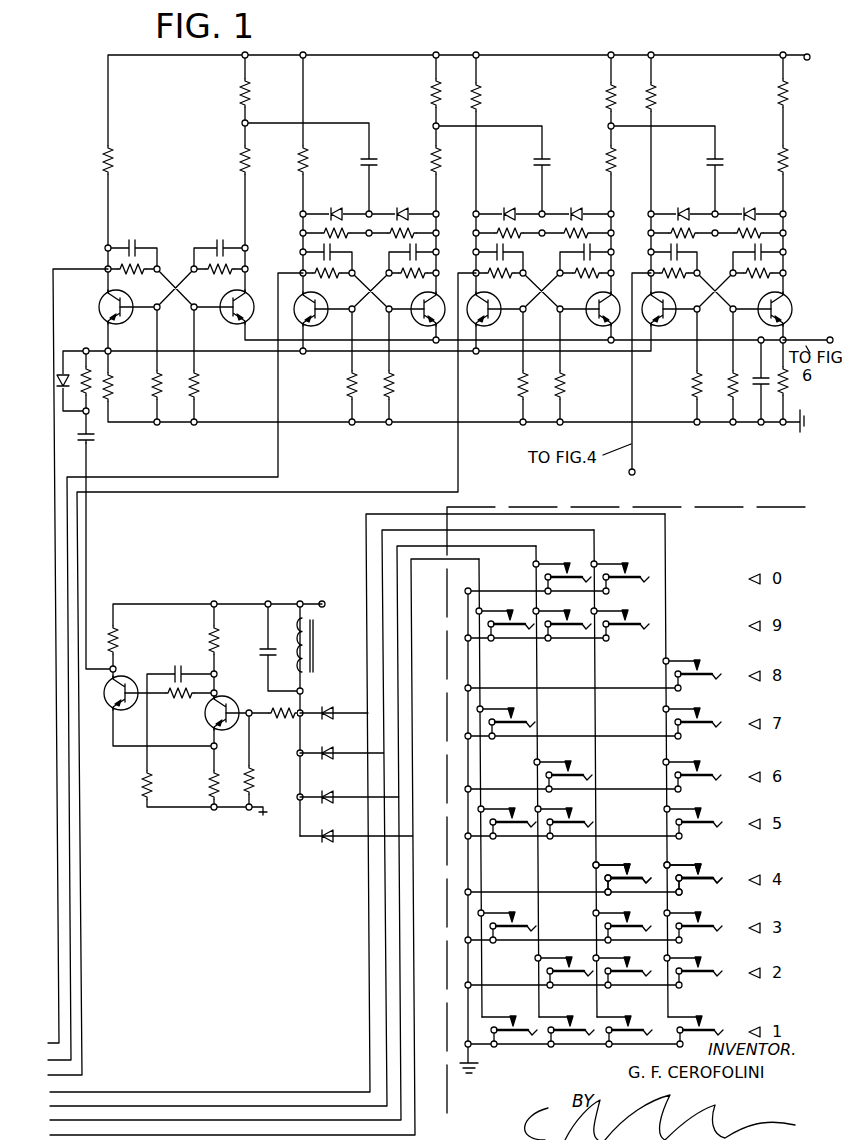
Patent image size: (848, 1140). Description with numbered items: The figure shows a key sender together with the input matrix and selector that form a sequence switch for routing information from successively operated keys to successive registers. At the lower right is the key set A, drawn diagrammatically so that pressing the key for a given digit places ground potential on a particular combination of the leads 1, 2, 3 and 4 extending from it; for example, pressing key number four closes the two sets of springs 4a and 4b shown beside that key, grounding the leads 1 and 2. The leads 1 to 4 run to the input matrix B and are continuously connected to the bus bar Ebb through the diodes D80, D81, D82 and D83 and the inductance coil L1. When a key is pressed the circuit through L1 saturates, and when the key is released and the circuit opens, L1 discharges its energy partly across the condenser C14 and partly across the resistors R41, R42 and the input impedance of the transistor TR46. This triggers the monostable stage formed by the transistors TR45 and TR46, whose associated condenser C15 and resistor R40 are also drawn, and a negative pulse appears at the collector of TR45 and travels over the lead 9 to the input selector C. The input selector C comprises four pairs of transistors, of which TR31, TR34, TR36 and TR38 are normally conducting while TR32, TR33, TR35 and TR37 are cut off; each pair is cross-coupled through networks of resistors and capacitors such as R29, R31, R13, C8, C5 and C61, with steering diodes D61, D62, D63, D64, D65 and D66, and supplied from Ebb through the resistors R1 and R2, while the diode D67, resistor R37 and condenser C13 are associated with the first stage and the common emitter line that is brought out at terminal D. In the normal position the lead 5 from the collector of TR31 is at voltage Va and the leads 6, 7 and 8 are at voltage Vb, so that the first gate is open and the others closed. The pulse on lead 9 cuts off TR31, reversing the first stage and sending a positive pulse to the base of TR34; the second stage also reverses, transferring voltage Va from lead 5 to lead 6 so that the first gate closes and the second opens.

The input selector C is at (435, 232).
The input matrix B is at (214, 702).
The key set A is at (629, 812).
The bus bar Ebb is at (575, 323).
The resistor R29 is at (252, 101).
The resistor R31 is at (116, 167).
The capacitor C8 is at (378, 167).
The diode D61 is at (347, 207).
The diode D62 is at (420, 207).
The diode D63 is at (523, 207).
The diode D64 is at (592, 194).
The capacitor C5 is at (552, 164).
The resistor R13 is at (636, 148).
The diode D65 is at (700, 207).
The diode D66 is at (769, 207).
The capacitor C61 is at (724, 164).
The resistor R1 is at (792, 94).
The resistor R2 is at (792, 162).
The transistor TR31 is at (102, 299).
The transistor TR32 is at (224, 322).
The transistor TR33 is at (326, 306).
The transistor TR34 is at (416, 306).
The transistor TR35 is at (496, 306).
The transistor TR36 is at (593, 306).
The transistor TR37 is at (672, 306).
The transistor TR38 is at (758, 306).
The diode D67 is at (71, 372).
The resistor R37 is at (91, 400).
The capacitor C13 is at (91, 443).
The terminal D is at (823, 338).
The lead 5 is at (54, 439).
The lead 6 is at (278, 457).
The lead 7 is at (458, 457).
The lead 8 is at (632, 457).
The lead 9 is at (88, 556).
The transistor TR45 is at (128, 676).
The transistor TR46 is at (206, 729).
The condenser C15 is at (186, 660).
The condenser C14 is at (266, 653).
The inductance coil L1 is at (318, 654).
The resistor R40 is at (192, 702).
The resistor R41 is at (285, 720).
The resistor R42 is at (258, 780).
The diode D80 is at (343, 699).
The diode D81 is at (338, 748).
The diode D82 is at (338, 781).
The diode D83 is at (343, 818).
The lead 1 is at (662, 528).
The lead 2 is at (590, 545).
The lead 3 is at (532, 557).
The lead 4 is at (477, 573).
The set of springs 4a is at (701, 875).
The set of springs 4b is at (640, 868).